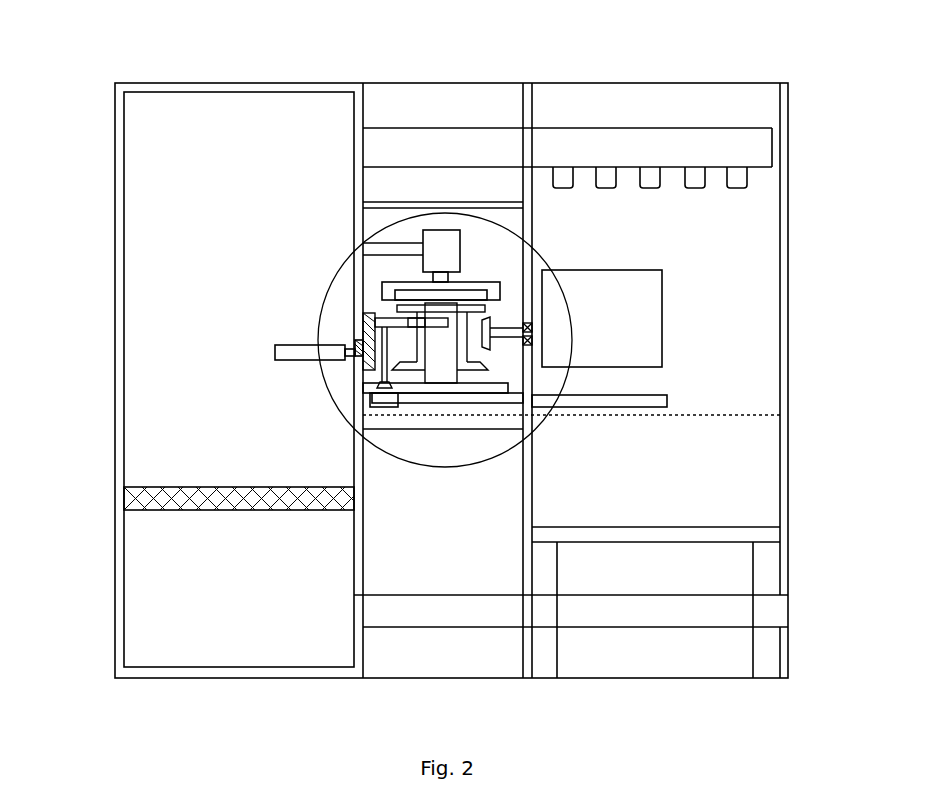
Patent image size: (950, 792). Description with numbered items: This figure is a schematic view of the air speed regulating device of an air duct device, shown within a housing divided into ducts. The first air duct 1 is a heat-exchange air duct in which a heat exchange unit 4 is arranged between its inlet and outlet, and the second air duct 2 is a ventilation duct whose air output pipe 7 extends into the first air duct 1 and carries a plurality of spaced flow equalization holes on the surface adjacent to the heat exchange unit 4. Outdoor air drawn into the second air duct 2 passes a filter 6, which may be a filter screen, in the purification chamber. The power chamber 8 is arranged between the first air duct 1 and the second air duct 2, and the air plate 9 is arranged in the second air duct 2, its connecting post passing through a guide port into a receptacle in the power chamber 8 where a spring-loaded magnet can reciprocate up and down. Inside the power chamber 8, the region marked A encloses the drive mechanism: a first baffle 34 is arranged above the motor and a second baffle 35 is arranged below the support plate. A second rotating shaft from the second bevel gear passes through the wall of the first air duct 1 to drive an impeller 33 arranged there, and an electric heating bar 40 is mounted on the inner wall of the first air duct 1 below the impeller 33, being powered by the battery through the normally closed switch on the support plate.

The first air duct 1 is at (725, 245).
The second air duct 2 is at (195, 302).
The heat exchange unit 4 is at (735, 415).
The filter 6 is at (217, 487).
The air output pipe 7 is at (648, 187).
The power chamber 8 is at (478, 522).
The air plate 9 is at (313, 348).
The impeller 33 is at (665, 340).
The first baffle 34 is at (458, 202).
The second baffle 35 is at (393, 430).
The electric heating bar 40 is at (667, 396).
The detail region A is at (345, 258).